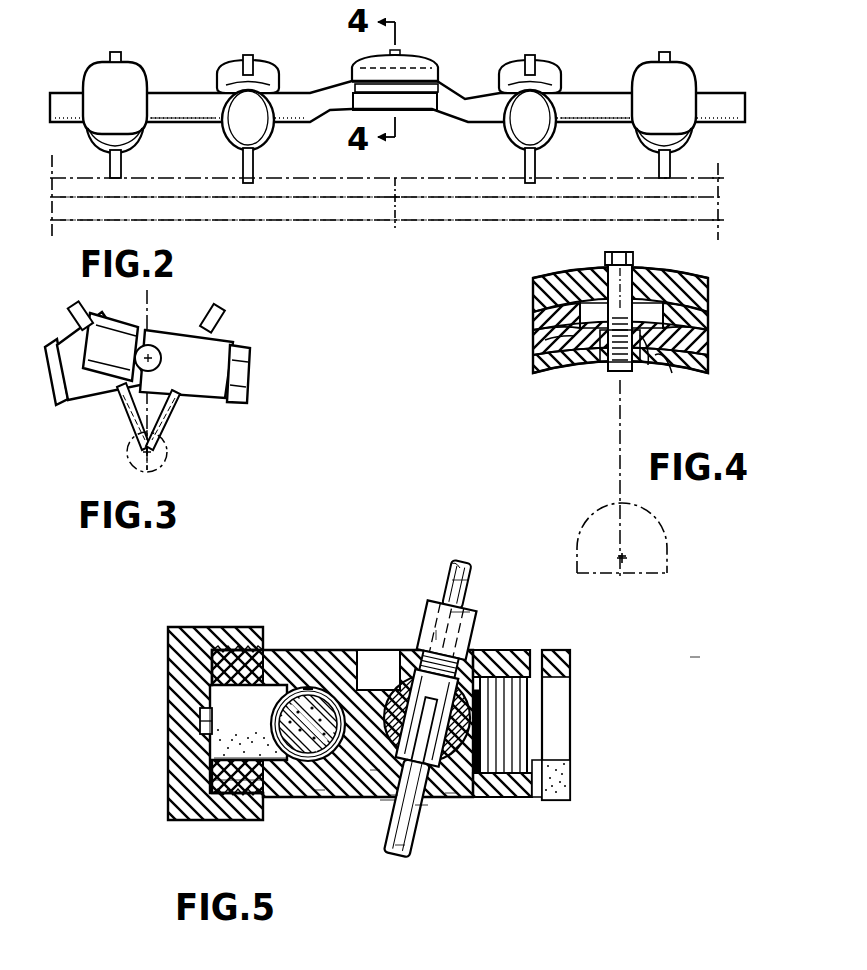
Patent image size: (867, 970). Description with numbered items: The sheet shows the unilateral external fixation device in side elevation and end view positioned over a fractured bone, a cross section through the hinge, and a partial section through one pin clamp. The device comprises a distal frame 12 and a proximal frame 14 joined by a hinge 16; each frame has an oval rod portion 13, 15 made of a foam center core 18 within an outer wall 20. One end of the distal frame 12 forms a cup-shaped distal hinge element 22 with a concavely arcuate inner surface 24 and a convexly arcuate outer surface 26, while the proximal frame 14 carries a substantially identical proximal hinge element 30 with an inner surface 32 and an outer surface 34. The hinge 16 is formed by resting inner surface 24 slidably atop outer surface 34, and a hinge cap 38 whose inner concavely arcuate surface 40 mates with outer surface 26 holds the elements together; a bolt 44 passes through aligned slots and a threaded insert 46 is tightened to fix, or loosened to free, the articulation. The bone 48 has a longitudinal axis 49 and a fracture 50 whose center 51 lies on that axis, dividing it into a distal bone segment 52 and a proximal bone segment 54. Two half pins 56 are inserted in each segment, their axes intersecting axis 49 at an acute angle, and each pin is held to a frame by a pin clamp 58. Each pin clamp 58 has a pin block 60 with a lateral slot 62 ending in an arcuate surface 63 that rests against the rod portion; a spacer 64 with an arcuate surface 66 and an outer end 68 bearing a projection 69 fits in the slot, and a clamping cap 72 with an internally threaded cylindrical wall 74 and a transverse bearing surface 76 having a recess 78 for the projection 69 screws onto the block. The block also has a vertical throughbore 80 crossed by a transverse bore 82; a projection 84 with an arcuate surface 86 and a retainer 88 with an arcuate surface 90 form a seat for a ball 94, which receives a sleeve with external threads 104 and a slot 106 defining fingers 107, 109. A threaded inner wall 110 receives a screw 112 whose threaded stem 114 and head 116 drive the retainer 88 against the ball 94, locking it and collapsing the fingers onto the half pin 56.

In FIG. 2, the distal frame 12 is at (190, 70).
In FIG. 2, the rod portion 13 is at (184, 112).
In FIG. 5, the rod portion 13 is at (311, 686).
In FIG. 2, the proximal frame 14 is at (627, 40).
In FIG. 2, the rod portion 15 is at (598, 118).
In FIG. 3, the rod portion 15 is at (161, 358).
In FIG. 2, the hinge 16 is at (452, 28).
In FIG. 4, the hinge 16 is at (531, 398).
In FIG. 5, the center core 18 is at (323, 800).
In FIG. 5, the outer wall 20 is at (362, 662).
In FIG. 2, the distal hinge element 22 is at (352, 88).
In FIG. 4, the distal hinge element 22 is at (712, 332).
In FIG. 4, the concavely arcuate inner surface 24 is at (552, 345).
In FIG. 4, the convexly arcuate outer surface 26 is at (545, 302).
In FIG. 2, the proximal hinge element 30 is at (419, 103).
In FIG. 4, the proximal hinge element 30 is at (712, 362).
In FIG. 4, the concavely arcuate inner surface 32 is at (672, 376).
In FIG. 4, the convexly arcuate outer surface 34 is at (648, 368).
In FIG. 2, the hinge cap 38 is at (440, 62).
In FIG. 4, the hinge cap 38 is at (711, 281).
In FIG. 4, the inner concavely arcuate surface 40 is at (700, 318).
In FIG. 4, the bolt 44 is at (618, 374).
In FIG. 4, the threaded insert 46 is at (604, 366).
In FIG. 2, the bone 48 is at (361, 240).
In FIG. 3, the bone 48 is at (128, 461).
In FIG. 4, the bone 48 is at (652, 520).
In FIG. 2, the longitudinal axis 49 is at (213, 200).
In FIG. 3, the longitudinal axis 49 is at (151, 452).
In FIG. 4, the longitudinal axis 49 is at (626, 556).
In FIG. 2, the fracture 50 is at (394, 228).
In FIG. 2, the center 51 is at (397, 198).
In FIG. 2, the distal bone segment 52 is at (289, 223).
In FIG. 2, the proximal bone segment 54 is at (722, 203).
In FIG. 2, the half pin 56 is at (123, 167).
In FIG. 3, the half pin 56 is at (222, 318).
In FIG. 2, the pin clamp 58 is at (290, 76).
In FIG. 3, the pin clamp 58 is at (101, 395).
In FIG. 5, the pin clamp 58 is at (692, 658).
In FIG. 5, the pin block 60 is at (364, 646).
In FIG. 5, the slot 62 is at (272, 797).
In FIG. 5, the arcuate surface 63 is at (320, 792).
In FIG. 5, the spacer 64 is at (232, 736).
In FIG. 5, the arcuate surface 66 is at (272, 714).
In FIG. 5, the outer end 68 is at (212, 780).
In FIG. 5, the projection 69 is at (212, 722).
In FIG. 5, the clamping cap 72 is at (168, 624).
In FIG. 5, the cylindrical wall 74 is at (238, 648).
In FIG. 5, the transverse bearing surface 76 is at (216, 776).
In FIG. 5, the recess 78 is at (199, 716).
In FIG. 5, the throughbore 80 is at (364, 692).
In FIG. 5, the transverse bore 82 is at (527, 660).
In FIG. 5, the projection 84 is at (375, 772).
In FIG. 5, the arcuate surface 86 is at (386, 694).
In FIG. 5, the retainer 88 is at (463, 800).
In FIG. 5, the arcuate surface 90 is at (451, 796).
In FIG. 5, the ball 94 is at (488, 678).
In FIG. 5, the external threads 104 is at (462, 568).
In FIG. 5, the slot 106 is at (401, 848).
In FIG. 5, the finger 107 is at (389, 802).
In FIG. 5, the finger 109 is at (423, 806).
In FIG. 5, the inner wall 110 is at (556, 793).
In FIG. 5, the screw 112 is at (573, 709).
In FIG. 5, the threaded stem 114 is at (513, 689).
In FIG. 5, the head 116 is at (572, 746).